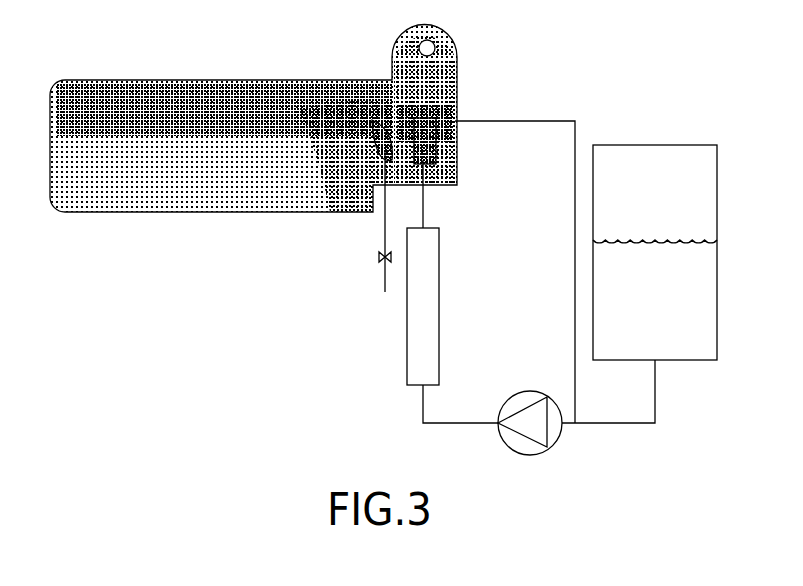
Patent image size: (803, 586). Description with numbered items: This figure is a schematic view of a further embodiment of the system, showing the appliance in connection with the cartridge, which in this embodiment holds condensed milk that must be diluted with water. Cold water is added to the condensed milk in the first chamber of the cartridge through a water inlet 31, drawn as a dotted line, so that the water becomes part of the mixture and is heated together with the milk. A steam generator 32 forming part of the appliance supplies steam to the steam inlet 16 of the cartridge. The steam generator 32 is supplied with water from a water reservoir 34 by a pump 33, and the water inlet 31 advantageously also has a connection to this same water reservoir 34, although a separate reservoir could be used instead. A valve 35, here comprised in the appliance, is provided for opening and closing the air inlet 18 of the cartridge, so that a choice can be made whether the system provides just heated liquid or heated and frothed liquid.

The steam inlet 16 is at (423, 160).
The air inlet 18 is at (388, 152).
The water inlet 31 is at (505, 121).
The steam generator 32 is at (427, 275).
The pump 33 is at (518, 405).
The water reservoir 34 is at (653, 163).
The valve 35 is at (378, 257).